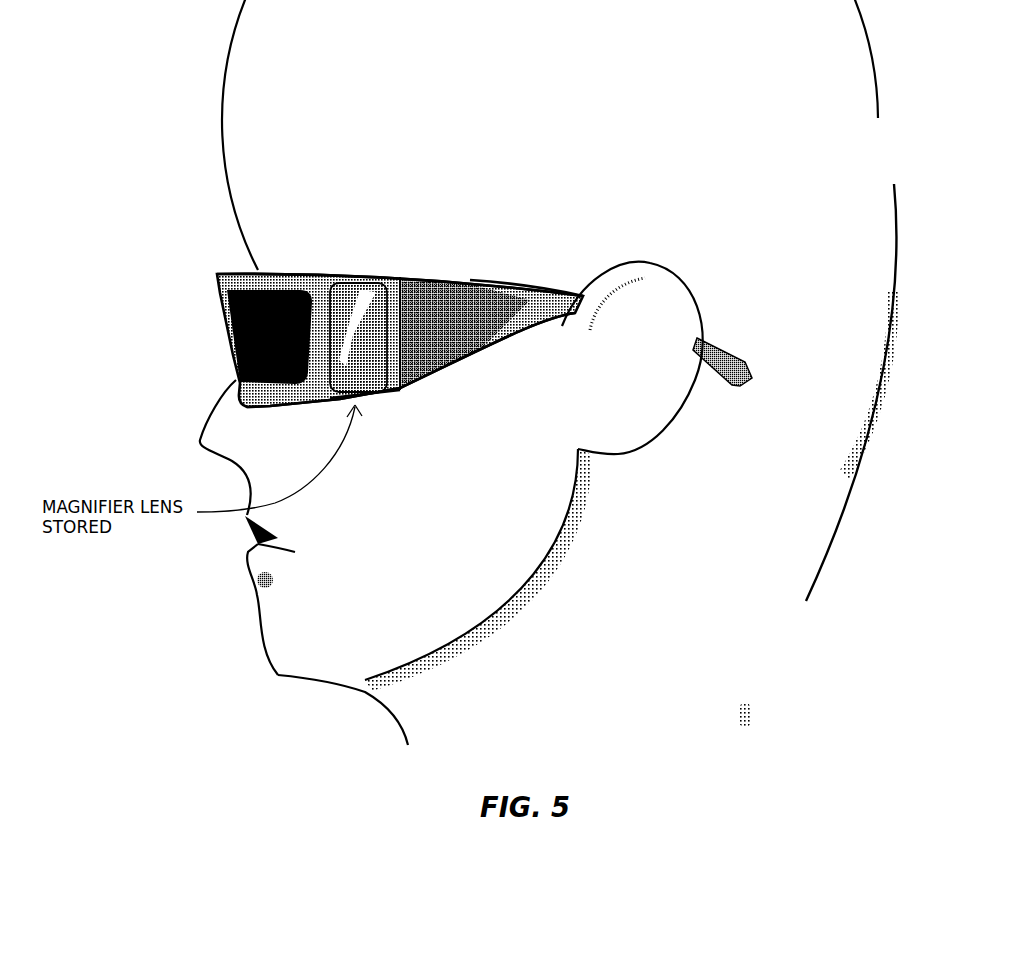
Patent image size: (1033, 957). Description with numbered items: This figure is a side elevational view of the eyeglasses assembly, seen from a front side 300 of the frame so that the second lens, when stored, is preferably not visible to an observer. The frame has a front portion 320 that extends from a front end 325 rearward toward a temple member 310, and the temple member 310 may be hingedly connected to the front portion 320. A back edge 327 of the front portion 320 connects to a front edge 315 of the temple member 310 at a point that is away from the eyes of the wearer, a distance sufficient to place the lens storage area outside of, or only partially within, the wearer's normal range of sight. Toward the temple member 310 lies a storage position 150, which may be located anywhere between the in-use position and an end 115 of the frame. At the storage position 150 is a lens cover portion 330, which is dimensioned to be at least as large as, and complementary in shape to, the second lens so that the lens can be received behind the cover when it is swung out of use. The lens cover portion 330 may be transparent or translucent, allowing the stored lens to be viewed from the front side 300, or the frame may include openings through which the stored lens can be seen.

The front side 300 is at (187, 348).
The front end 325 is at (224, 270).
The front portion 320 is at (292, 277).
The lens cover portion 330 is at (368, 290).
The end 115 is at (401, 275).
The front edge 315 is at (418, 276).
The temple member 310 is at (478, 284).
The back edge 327 is at (400, 393).
The storage position 150 is at (376, 432).